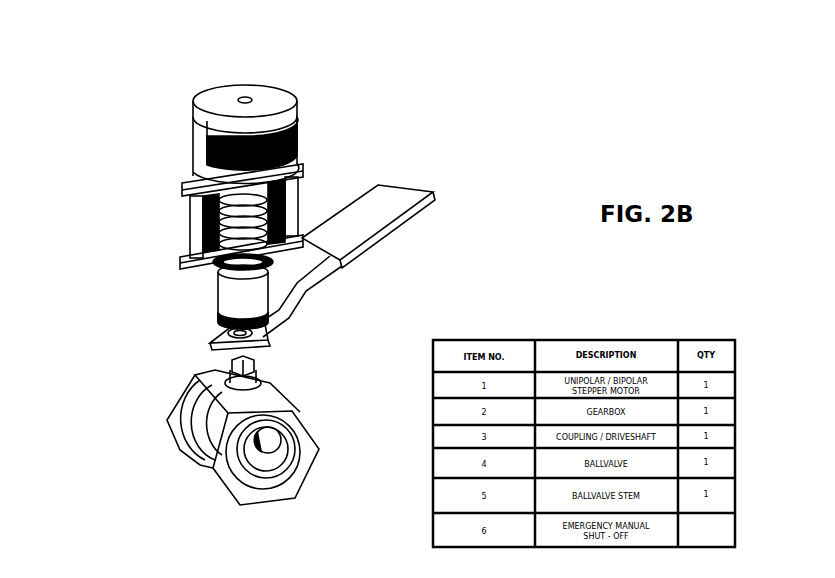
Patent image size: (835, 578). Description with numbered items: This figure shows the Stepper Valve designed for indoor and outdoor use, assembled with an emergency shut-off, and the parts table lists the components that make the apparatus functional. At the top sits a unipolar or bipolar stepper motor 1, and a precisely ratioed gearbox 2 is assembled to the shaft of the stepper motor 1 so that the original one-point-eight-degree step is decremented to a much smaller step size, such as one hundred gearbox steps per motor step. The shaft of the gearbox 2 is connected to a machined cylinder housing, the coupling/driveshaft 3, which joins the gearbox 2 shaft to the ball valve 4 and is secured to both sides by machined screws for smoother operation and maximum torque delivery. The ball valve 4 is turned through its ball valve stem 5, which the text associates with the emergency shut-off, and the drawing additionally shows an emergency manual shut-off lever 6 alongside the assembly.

The stepper motor 1 is at (195, 147).
The gearbox 2 is at (298, 205).
The coupling/driveshaft 3 is at (218, 292).
The ball valve 4 is at (288, 405).
The emergency shut-off 5 is at (230, 367).
The emergency manual shut-off 6 is at (433, 192).